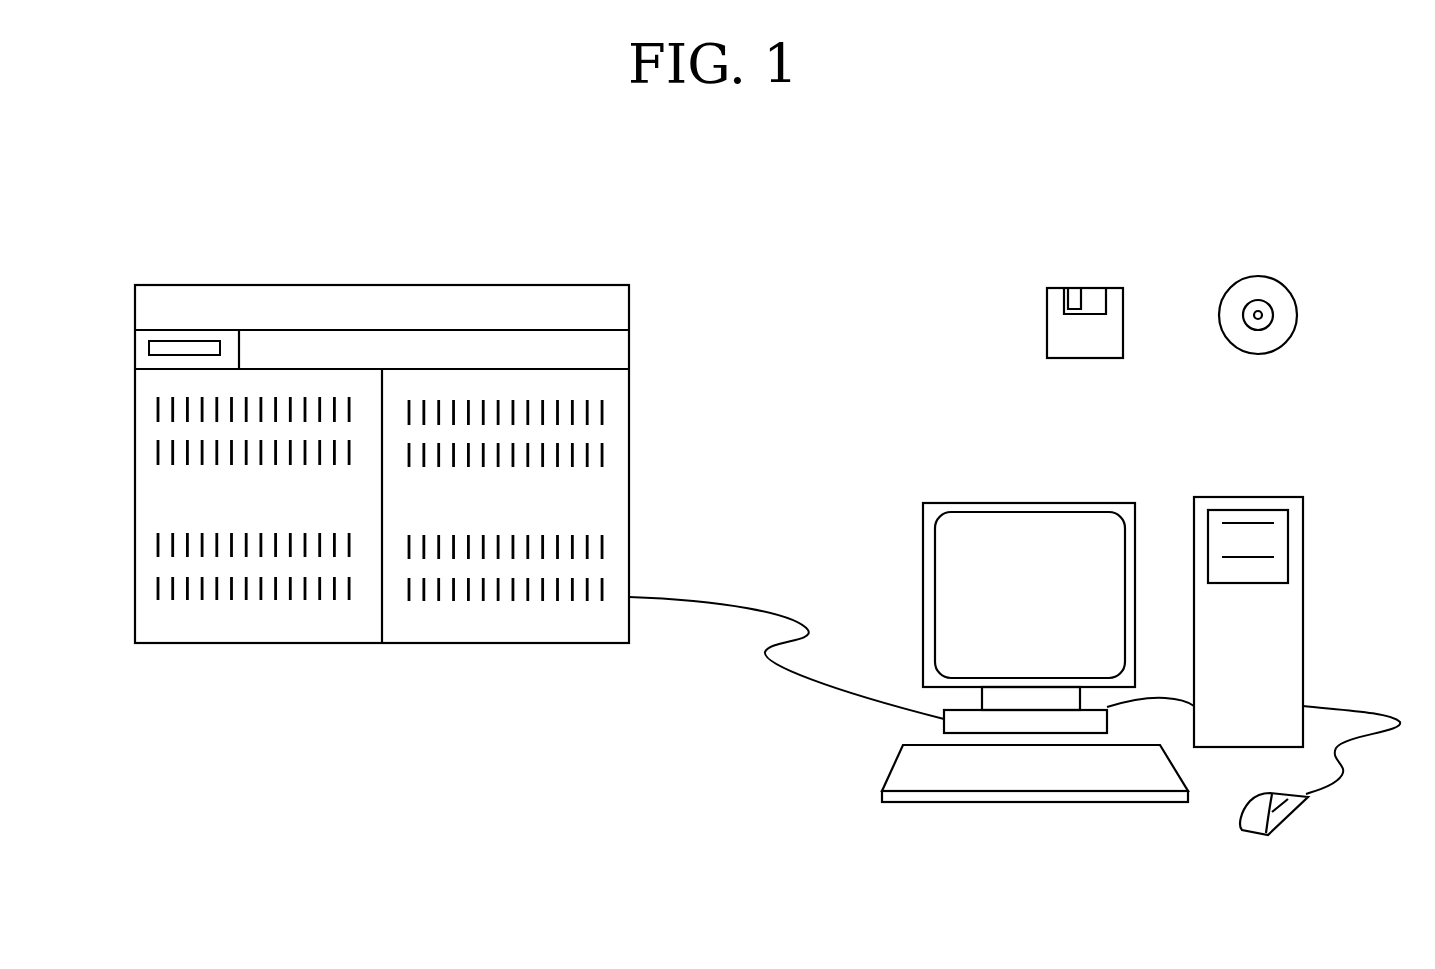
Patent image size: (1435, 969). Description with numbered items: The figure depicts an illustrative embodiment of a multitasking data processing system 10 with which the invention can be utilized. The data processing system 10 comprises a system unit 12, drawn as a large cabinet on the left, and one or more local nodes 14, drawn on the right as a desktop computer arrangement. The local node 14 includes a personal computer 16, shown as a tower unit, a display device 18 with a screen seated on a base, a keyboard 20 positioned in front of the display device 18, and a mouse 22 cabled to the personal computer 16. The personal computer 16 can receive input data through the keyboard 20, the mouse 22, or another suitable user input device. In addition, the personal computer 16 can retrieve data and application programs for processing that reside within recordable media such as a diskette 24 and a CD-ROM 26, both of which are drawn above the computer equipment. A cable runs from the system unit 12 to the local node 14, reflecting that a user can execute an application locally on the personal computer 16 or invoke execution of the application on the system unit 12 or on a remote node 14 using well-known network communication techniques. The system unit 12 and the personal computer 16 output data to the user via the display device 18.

The data processing system 10 is at (670, 343).
The system unit 12 is at (548, 286).
The local node 14 is at (1150, 856).
The personal computer 16 is at (1241, 497).
The display device 18 is at (1065, 505).
The keyboard 20 is at (962, 803).
The mouse 22 is at (1280, 822).
The diskette 24 is at (1047, 312).
The CD-ROM 26 is at (1232, 289).